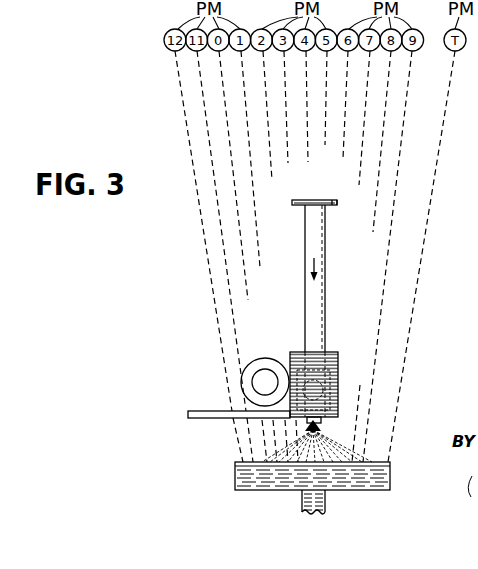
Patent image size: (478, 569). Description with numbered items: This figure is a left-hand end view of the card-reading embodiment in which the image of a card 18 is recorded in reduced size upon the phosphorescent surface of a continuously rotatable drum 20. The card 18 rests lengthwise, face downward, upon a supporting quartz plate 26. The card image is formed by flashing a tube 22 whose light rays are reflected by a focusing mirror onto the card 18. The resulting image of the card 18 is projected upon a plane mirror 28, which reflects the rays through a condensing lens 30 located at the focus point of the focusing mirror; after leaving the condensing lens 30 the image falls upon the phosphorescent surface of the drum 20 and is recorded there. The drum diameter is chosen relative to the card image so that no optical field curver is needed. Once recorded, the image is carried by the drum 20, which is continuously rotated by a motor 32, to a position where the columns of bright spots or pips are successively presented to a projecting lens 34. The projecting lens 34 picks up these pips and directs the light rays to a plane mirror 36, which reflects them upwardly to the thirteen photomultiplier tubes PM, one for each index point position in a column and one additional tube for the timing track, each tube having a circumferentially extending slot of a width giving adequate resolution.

The card 18 is at (317, 199).
The continuously rotatable drum 20 is at (305, 245).
The tube 22 is at (251, 66).
The supporting quartz plate 26 is at (336, 206).
The plane mirror 28 is at (297, 352).
The condensing lens 30 is at (300, 417).
The motor 32 is at (265, 358).
The projecting lens 34 is at (324, 424).
The plane mirror 36 is at (240, 480).